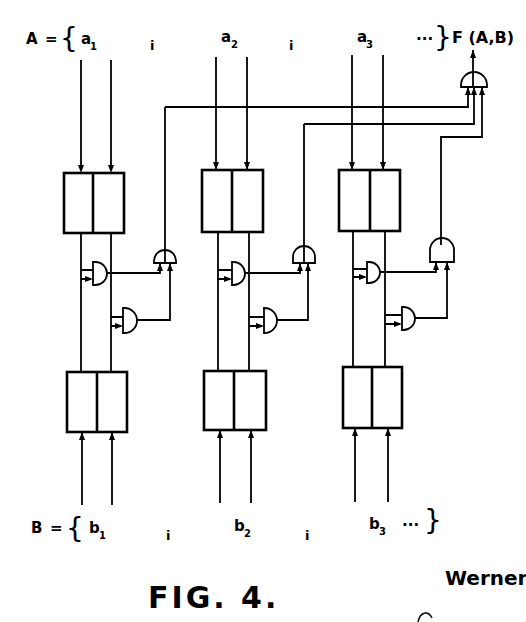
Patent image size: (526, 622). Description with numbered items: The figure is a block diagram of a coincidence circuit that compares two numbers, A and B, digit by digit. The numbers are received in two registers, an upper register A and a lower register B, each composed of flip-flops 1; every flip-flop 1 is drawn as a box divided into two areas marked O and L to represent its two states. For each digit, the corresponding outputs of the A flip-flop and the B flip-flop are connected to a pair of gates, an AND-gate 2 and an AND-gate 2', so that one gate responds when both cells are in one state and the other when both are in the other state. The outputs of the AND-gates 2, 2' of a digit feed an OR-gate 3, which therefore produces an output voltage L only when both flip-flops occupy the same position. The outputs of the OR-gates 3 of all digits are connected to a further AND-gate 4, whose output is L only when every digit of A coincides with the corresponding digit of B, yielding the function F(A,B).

The flip-flop 1 is at (117, 205).
The AND-gate 2 is at (260, 272).
The AND-gate 2' is at (280, 304).
The OR-gate 3 is at (176, 258).
The further AND-gate 4 is at (488, 80).